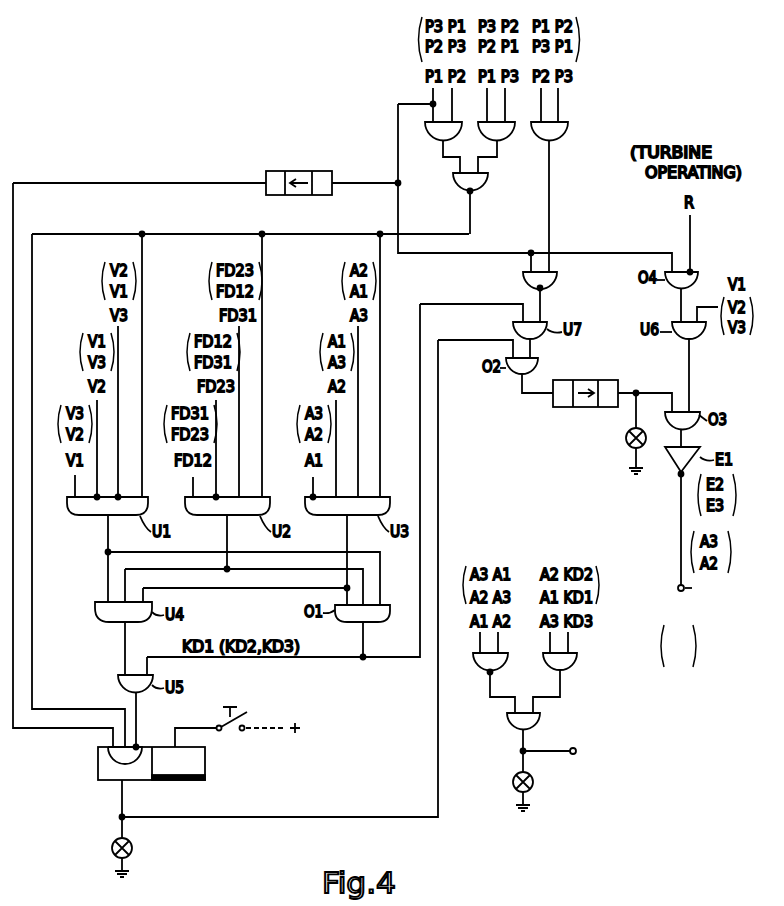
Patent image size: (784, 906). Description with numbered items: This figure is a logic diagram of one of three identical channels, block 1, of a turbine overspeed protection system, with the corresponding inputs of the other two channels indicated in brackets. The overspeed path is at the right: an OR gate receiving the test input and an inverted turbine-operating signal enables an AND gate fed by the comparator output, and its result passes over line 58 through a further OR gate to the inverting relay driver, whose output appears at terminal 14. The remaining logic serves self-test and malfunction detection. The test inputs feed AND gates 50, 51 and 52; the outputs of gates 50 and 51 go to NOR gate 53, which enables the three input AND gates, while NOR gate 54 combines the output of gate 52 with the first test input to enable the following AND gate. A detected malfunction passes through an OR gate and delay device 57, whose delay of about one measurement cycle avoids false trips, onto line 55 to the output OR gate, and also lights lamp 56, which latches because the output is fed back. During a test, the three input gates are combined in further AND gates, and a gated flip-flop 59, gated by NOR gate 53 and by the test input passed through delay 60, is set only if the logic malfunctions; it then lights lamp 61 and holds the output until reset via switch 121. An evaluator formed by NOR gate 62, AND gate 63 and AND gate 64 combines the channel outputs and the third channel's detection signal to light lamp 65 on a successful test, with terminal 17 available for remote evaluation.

The monitoring channel block 1 is at (262, 107).
The output terminal 14 is at (686, 569).
The output terminal 17 is at (593, 757).
The AND gate 50 is at (430, 136).
The AND gate 51 is at (509, 136).
The AND gate 52 is at (562, 136).
The NOR gate 53 is at (484, 183).
The NOR gate 54 is at (523, 280).
The line 55 is at (656, 390).
The lamp 56 is at (626, 441).
The delay device 57 is at (567, 408).
The line 58 is at (689, 363).
The gated flip-flop 59 is at (205, 769).
The delay 60 is at (277, 178).
The lamp 61 is at (133, 851).
The NOR gate 62 is at (476, 662).
The AND gate 63 is at (569, 668).
The AND gate 64 is at (507, 725).
The lamp 65 is at (513, 786).
The reset switch 121 is at (248, 719).